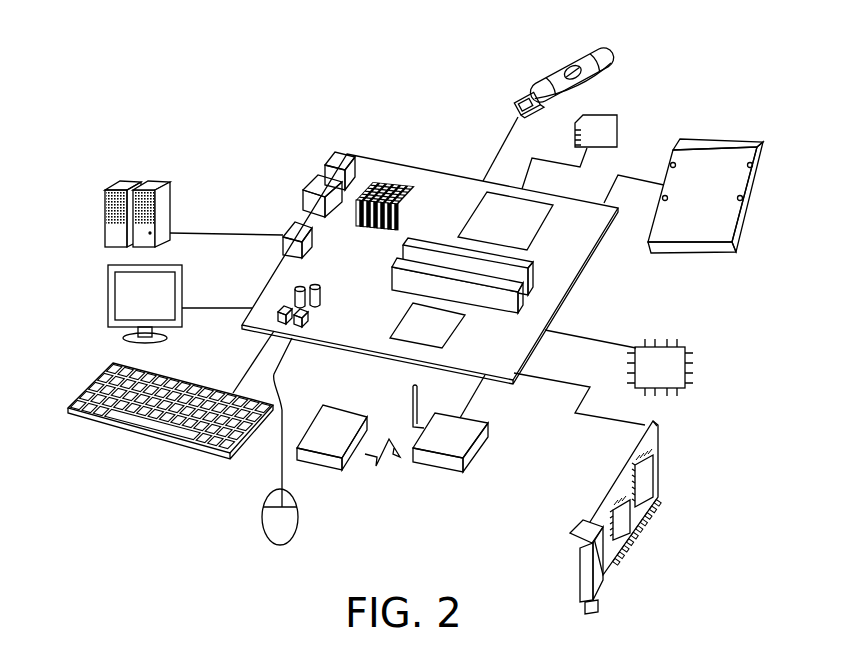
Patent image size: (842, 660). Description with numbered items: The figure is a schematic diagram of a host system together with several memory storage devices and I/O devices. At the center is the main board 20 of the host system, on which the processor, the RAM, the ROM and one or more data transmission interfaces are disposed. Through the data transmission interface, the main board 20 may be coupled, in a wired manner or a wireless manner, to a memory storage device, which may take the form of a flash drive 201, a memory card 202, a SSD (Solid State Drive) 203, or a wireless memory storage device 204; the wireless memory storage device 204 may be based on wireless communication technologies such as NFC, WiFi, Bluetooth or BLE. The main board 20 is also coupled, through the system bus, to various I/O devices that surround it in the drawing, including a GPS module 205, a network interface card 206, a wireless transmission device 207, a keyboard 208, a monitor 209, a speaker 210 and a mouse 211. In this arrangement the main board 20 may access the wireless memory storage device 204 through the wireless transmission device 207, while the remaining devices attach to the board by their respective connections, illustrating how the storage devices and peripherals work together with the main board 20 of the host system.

The main board 20 is at (432, 190).
The flash drive 201 is at (562, 72).
The memory card 202 is at (622, 117).
The SSD (Solid State Drive) 203 is at (720, 138).
The wireless memory storage device 204 is at (303, 418).
The GPS (Global Positioning System) module 205 is at (690, 366).
The network interface card 206 is at (656, 470).
The wireless transmission device 207 is at (478, 457).
The keyboard 208 is at (173, 443).
The monitor 209 is at (105, 312).
The speaker 210 is at (103, 236).
The mouse 211 is at (298, 532).